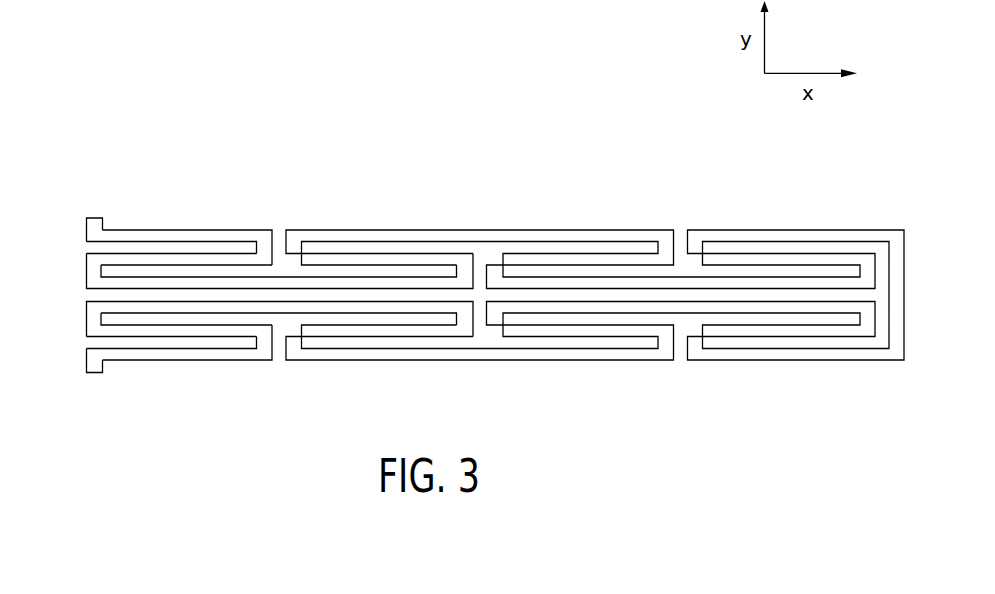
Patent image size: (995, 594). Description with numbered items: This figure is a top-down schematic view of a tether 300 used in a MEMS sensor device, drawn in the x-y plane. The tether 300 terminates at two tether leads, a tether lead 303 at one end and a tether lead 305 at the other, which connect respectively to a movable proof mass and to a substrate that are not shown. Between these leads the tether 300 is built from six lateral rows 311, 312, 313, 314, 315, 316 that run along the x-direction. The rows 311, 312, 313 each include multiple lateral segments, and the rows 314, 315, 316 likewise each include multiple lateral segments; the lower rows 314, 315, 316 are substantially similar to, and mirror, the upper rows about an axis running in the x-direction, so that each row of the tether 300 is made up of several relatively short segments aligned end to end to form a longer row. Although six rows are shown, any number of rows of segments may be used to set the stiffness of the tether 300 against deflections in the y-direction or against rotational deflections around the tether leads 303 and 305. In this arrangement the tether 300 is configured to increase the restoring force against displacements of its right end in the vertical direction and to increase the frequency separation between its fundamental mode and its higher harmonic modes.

The tether 300 is at (132, 97).
The tether lead 303 is at (97, 226).
The tether lead 305 is at (97, 366).
The lateral row 311 is at (85, 235).
The lateral row 312 is at (86, 259).
The lateral row 313 is at (86, 286).
The lateral row 314 is at (86, 305).
The lateral row 315 is at (86, 329).
The lateral row 316 is at (86, 354).